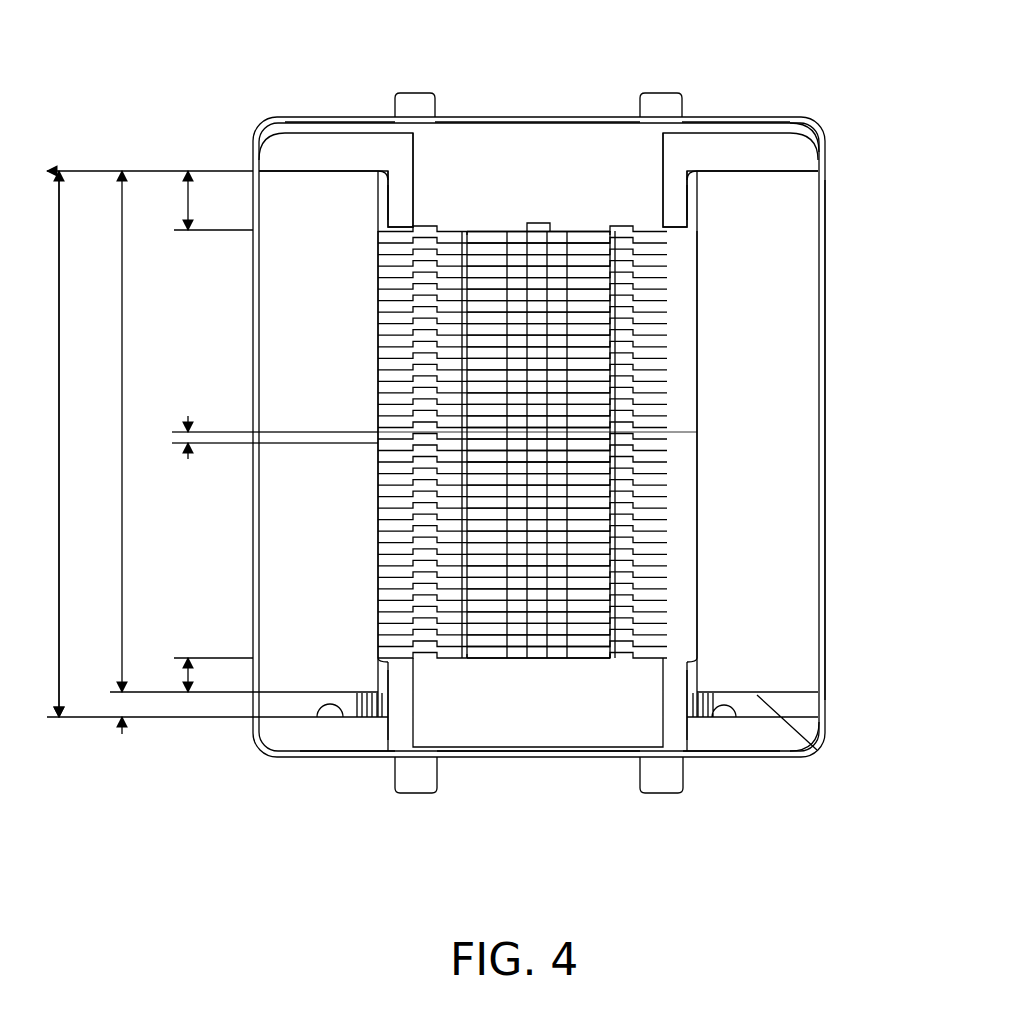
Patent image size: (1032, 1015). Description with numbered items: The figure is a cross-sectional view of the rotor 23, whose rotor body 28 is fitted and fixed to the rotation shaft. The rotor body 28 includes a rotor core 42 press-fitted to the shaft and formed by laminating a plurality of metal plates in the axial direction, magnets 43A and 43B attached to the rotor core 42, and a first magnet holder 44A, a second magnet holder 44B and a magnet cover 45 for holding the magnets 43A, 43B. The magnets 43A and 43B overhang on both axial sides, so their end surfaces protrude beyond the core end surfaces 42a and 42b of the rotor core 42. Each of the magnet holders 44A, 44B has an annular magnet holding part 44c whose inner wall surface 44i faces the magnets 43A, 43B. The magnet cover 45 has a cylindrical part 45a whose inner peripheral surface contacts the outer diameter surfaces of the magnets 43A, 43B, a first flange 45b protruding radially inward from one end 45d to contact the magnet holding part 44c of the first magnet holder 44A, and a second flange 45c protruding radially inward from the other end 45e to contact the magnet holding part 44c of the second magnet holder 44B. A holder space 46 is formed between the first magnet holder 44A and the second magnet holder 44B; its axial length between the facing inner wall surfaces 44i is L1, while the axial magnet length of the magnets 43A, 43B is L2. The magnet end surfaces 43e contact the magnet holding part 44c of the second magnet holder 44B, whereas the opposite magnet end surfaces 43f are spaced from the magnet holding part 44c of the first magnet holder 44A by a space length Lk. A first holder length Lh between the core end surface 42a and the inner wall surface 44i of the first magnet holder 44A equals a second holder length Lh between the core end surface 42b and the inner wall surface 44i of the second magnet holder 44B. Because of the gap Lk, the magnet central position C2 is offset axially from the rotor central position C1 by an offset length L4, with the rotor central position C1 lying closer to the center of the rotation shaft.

The rotor 23 is at (487, 110).
The rotor body 28 is at (378, 112).
The rotor core 42 is at (706, 293).
The core end surface 42a is at (625, 660).
The core end surface 42b is at (628, 228).
The magnet 43A is at (257, 276).
The magnet 43B is at (537, 444).
The magnet end surface 43e is at (322, 178).
The magnet end surface 43f is at (292, 697).
The first magnet holder 44A is at (738, 764).
The second magnet holder 44B is at (764, 128).
The magnet holding part 44c is at (700, 140).
The inner wall surface 44i is at (290, 187).
The magnet cover 45 is at (832, 482).
The cylindrical part 45a is at (826, 338).
The first flange 45b is at (782, 758).
The second flange 45c is at (742, 116).
The one end 45d is at (830, 740).
The other end 45e is at (820, 152).
The holder space 46 is at (315, 722).
The length of holder space L1 is at (139, 444).
The magnet length L2 is at (169, 431).
The offset length L4 is at (419, 437).
The holder length Lh is at (198, 431).
The space length Lk is at (98, 711).
The rotor central position C1 is at (222, 445).
The magnet central position C2 is at (222, 430).